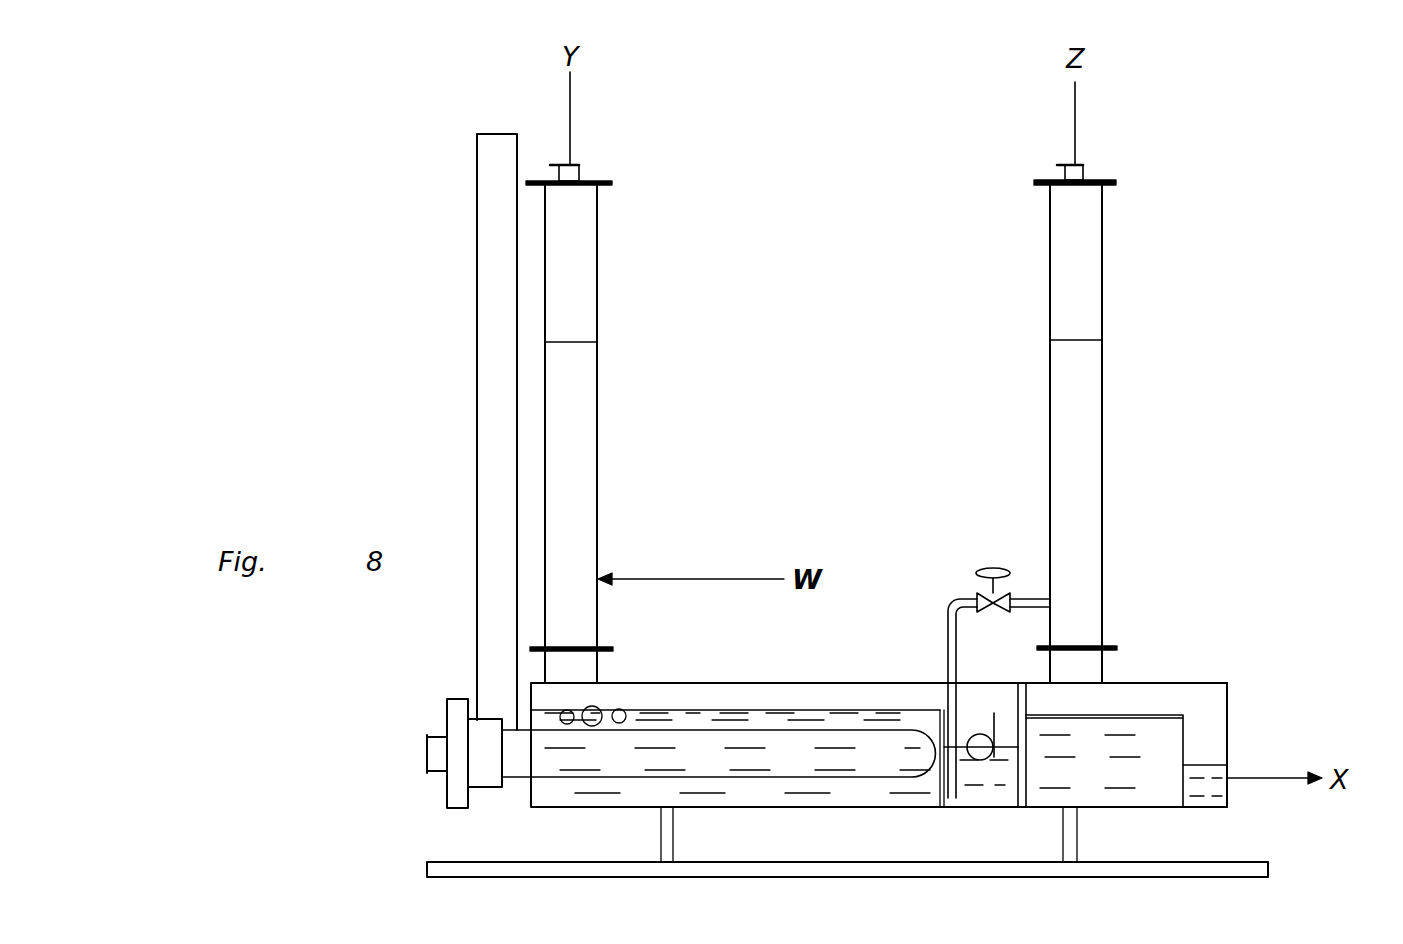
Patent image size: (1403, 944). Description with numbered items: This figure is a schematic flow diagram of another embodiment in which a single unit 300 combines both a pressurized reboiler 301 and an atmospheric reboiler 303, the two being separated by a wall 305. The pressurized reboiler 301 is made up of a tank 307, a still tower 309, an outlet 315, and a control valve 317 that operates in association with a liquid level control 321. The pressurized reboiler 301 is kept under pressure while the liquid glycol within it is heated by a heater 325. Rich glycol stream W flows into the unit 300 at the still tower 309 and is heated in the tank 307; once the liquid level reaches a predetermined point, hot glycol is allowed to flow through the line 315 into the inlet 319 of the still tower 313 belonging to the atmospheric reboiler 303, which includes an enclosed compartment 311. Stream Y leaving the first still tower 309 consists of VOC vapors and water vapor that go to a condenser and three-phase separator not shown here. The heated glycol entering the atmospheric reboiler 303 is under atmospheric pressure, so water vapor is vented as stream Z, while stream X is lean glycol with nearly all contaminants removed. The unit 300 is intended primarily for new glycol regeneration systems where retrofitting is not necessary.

The single unit 300 is at (1299, 362).
The pressurized reboiler 301 is at (738, 808).
The atmospheric reboiler 303 is at (1143, 808).
The wall 305 is at (1016, 790).
The tank 307 is at (673, 688).
The still tower 309 is at (598, 390).
The enclosed compartment 311 is at (1147, 688).
The still tower 313 is at (1103, 417).
The outlet 315 is at (947, 629).
The control valve 317 is at (977, 572).
The inlet 319 is at (1045, 597).
The liquid level control 321 is at (972, 732).
The heater 325 is at (447, 797).